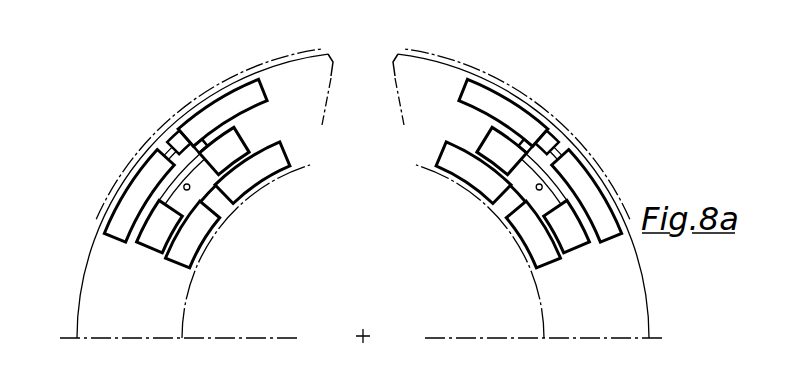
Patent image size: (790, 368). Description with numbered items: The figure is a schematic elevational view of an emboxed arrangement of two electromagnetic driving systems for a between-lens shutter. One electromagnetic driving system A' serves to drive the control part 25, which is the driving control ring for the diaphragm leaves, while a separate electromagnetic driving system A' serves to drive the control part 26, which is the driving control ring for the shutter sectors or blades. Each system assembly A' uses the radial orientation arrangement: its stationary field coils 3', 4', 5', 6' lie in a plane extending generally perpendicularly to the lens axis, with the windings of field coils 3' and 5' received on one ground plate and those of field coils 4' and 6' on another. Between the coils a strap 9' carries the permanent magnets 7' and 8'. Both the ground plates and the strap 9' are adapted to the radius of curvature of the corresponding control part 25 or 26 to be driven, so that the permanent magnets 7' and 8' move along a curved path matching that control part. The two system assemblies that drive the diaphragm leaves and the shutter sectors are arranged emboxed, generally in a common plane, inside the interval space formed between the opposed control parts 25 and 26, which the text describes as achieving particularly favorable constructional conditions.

The stationary field coil 3' is at (300, 135).
The stationary field coil 4' is at (346, 205).
The stationary field coil 5' is at (430, 135).
The stationary field coil 6' is at (388, 207).
The permanent magnet 7' is at (360, 228).
The permanent magnet 8' is at (362, 142).
The strap 9' is at (364, 121).
The electromagnetic driving system A' is at (352, 134).
The control part 25 is at (165, 307).
The control part 26 is at (592, 307).